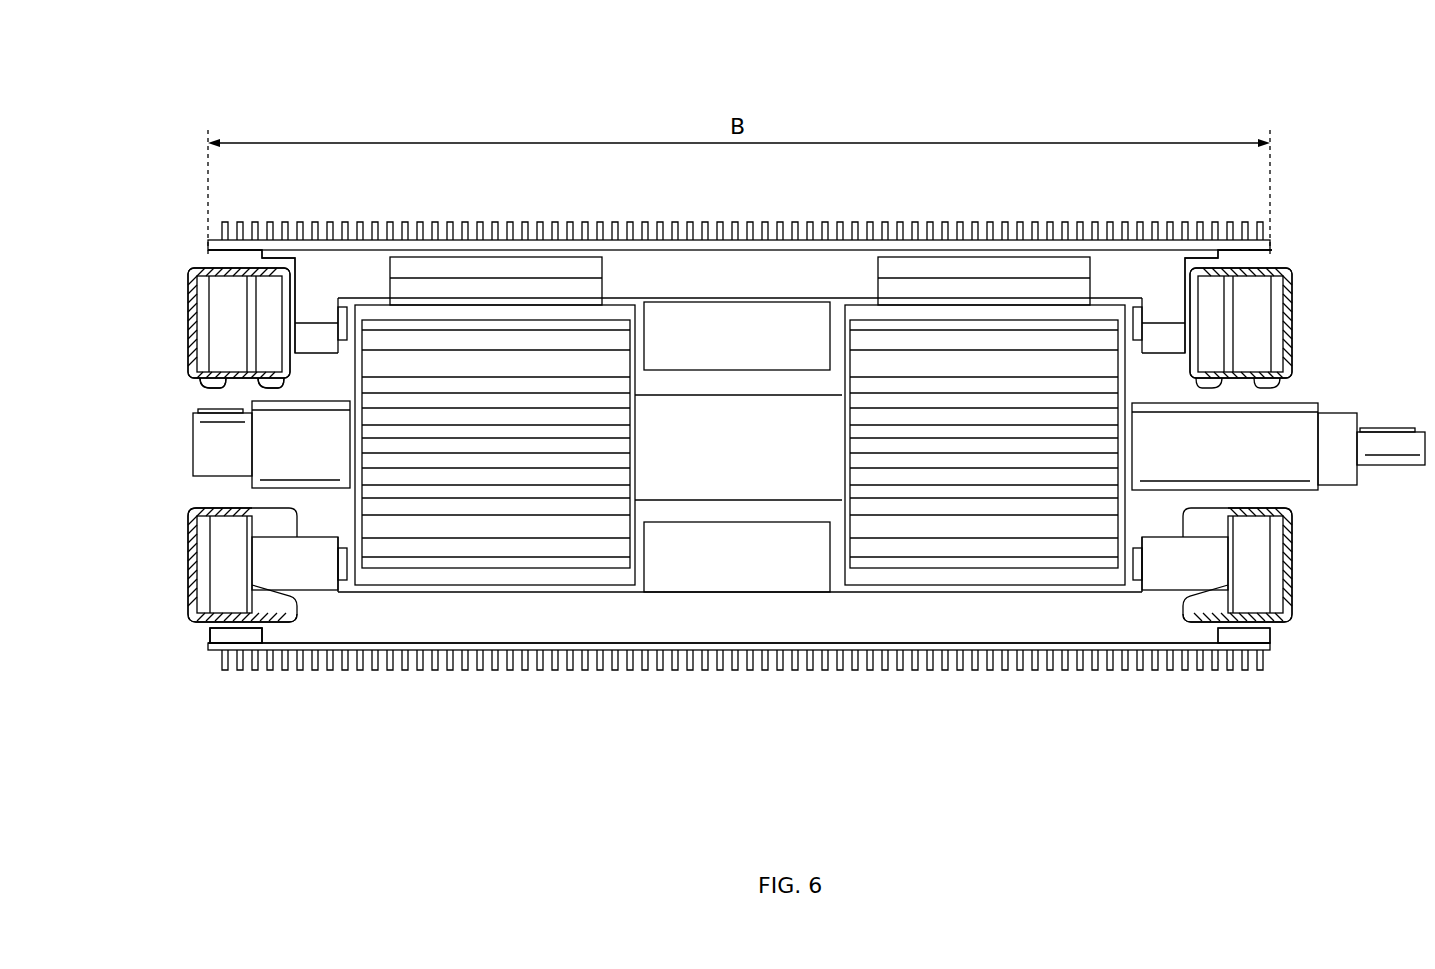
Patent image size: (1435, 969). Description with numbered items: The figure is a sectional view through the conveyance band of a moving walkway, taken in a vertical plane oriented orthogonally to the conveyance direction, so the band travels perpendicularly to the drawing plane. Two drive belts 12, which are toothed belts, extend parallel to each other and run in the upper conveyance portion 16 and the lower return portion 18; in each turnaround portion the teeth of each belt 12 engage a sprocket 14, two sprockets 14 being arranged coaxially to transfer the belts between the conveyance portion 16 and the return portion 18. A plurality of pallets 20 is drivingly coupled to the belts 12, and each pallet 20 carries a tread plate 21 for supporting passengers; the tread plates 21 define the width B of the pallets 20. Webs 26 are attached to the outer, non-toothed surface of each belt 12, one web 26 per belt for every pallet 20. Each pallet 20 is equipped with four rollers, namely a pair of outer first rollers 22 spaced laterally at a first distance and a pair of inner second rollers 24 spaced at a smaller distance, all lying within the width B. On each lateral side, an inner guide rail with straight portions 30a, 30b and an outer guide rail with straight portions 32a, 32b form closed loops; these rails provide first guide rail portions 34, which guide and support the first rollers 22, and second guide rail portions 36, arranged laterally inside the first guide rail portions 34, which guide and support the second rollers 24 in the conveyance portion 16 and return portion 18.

The drive belt 12 is at (480, 580).
The sprocket 14 is at (655, 445).
The conveyance portion 16 is at (1020, 120).
The return portion 18 is at (645, 772).
The pallet 20 is at (1278, 182).
The tread plate 21 is at (1020, 205).
The first roller 22 is at (225, 305).
The second roller 24 is at (268, 343).
The web 26 is at (575, 280).
The straight portion of first guide rail 30a is at (188, 393).
The straight portion of first guide rail 30b is at (190, 516).
The straight portion of second guide rail 32a is at (195, 245).
The straight portion of second guide rail 32b is at (188, 640).
The first guide rail portion 34 is at (213, 388).
The second guide rail portion 36 is at (268, 388).